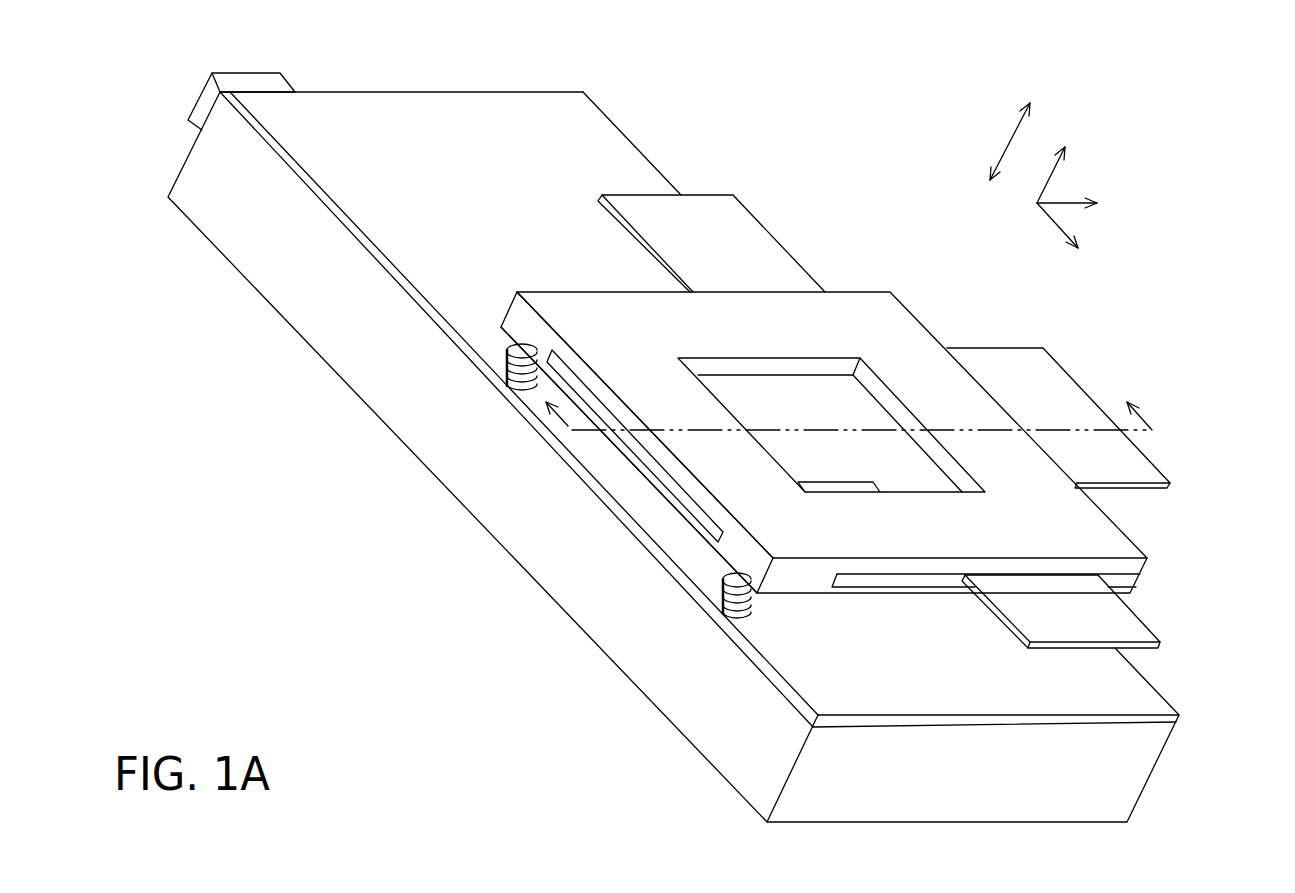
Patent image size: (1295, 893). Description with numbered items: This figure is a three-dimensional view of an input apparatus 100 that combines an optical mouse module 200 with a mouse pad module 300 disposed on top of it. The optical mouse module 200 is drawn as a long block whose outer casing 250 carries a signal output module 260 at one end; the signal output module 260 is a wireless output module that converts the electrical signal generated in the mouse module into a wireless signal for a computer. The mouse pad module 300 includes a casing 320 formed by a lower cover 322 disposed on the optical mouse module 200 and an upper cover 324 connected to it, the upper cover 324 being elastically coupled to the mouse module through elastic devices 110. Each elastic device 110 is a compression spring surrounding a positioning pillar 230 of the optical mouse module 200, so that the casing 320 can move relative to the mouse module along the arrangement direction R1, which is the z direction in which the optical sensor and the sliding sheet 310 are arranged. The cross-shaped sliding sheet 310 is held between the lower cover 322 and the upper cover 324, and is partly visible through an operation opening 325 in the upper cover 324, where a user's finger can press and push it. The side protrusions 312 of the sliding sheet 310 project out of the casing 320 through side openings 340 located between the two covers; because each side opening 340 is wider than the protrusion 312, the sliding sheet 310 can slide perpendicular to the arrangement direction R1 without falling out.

The input apparatus 100 is at (1223, 730).
The elastic device 110 is at (736, 594).
The optical mouse module 200 is at (293, 368).
The positioning pillar 230 is at (740, 612).
The casing 250 is at (247, 245).
The signal output module 260 is at (208, 98).
The mouse pad module 300 is at (927, 310).
The sliding sheet 310 is at (860, 413).
The side protrusion 312 is at (757, 233).
The casing 320 is at (312, 458).
The lower cover 322 is at (508, 335).
The upper cover 324 is at (517, 313).
The operation opening 325 is at (827, 376).
The side opening 340 is at (692, 497).
The arrangement direction R1 is at (1007, 140).